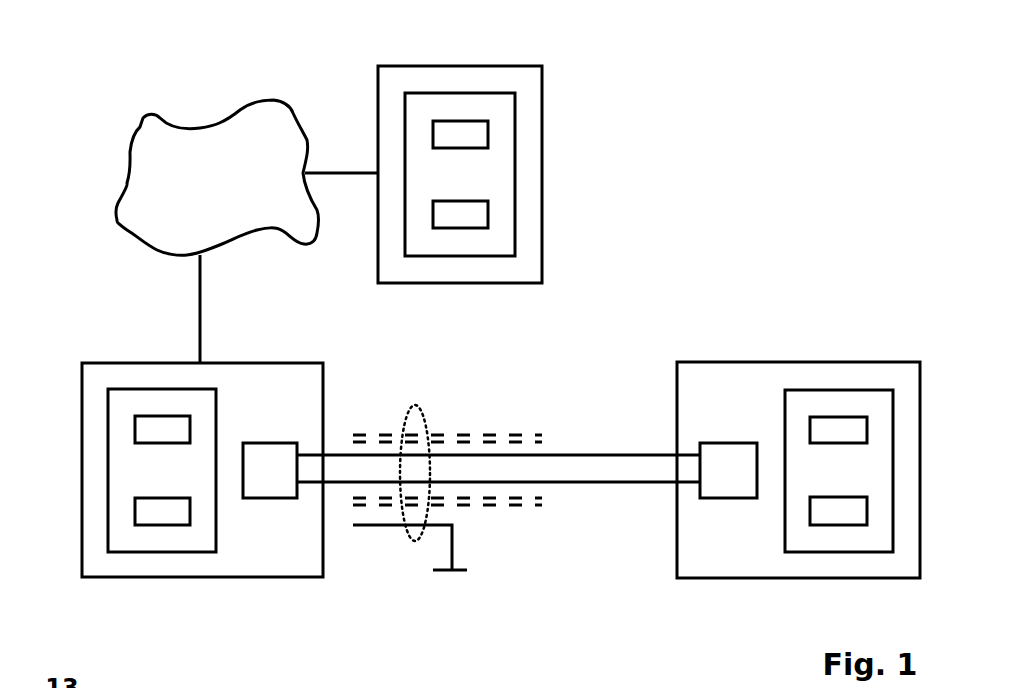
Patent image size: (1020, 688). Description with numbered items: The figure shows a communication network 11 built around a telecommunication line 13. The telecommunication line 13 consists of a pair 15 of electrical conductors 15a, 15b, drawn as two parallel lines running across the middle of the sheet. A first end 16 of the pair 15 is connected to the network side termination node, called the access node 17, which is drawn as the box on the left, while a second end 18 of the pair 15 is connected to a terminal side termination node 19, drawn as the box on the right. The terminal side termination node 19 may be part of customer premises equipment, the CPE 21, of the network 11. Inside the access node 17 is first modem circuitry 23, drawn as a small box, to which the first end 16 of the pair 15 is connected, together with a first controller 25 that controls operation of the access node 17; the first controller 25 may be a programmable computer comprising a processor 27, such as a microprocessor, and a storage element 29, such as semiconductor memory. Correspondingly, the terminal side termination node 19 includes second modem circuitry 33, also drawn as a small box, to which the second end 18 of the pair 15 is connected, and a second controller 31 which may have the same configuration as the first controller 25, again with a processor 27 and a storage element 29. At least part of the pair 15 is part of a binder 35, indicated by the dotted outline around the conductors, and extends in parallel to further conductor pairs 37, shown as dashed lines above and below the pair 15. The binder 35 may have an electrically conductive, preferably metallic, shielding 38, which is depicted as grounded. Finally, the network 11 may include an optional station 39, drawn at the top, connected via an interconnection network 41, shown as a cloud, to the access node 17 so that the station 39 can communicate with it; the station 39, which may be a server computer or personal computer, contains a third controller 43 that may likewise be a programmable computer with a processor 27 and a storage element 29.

The communication network 11 is at (119, 98).
The telecommunication line 13 is at (536, 351).
The pair of electrical conductors 15 is at (498, 537).
The electrical conductor 15a is at (637, 457).
The electrical conductor 15b is at (655, 483).
The first end 16 is at (355, 399).
The access node 17 is at (265, 363).
The second end 18 is at (642, 412).
The terminal side termination node 19 is at (713, 362).
The customer premises equipment 21 is at (778, 254).
The first modem circuitry 23 is at (286, 500).
The first controller 25 is at (166, 390).
The processor 27 is at (488, 138).
The storage element 29 is at (488, 212).
The second controller 31 is at (873, 390).
The second modem circuitry 33 is at (745, 500).
The binder 35 is at (422, 413).
The further conductor pairs 37 is at (552, 428).
The shielding 38 is at (452, 542).
The station 39 is at (542, 240).
The interconnection network 41 is at (233, 115).
The third controller 43 is at (512, 163).